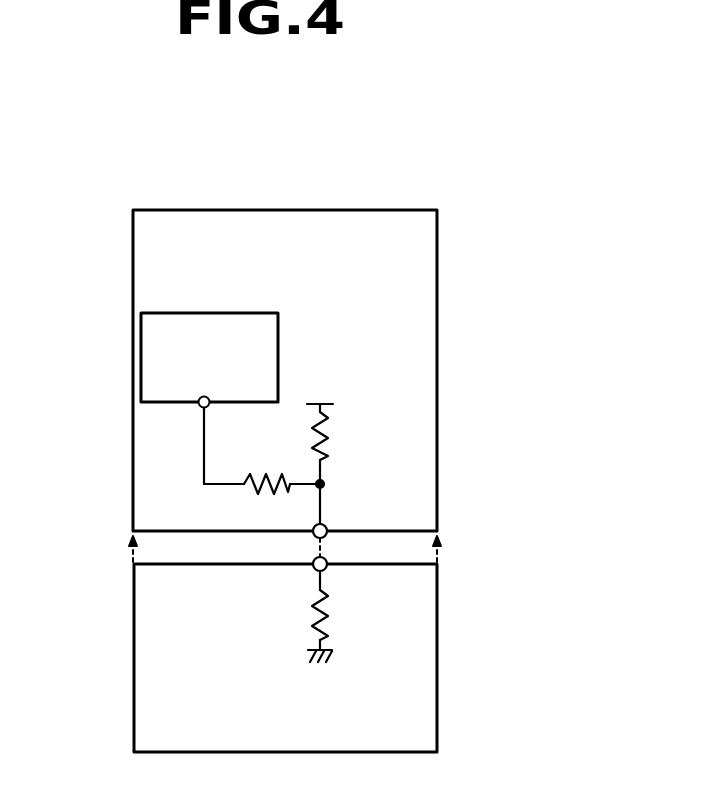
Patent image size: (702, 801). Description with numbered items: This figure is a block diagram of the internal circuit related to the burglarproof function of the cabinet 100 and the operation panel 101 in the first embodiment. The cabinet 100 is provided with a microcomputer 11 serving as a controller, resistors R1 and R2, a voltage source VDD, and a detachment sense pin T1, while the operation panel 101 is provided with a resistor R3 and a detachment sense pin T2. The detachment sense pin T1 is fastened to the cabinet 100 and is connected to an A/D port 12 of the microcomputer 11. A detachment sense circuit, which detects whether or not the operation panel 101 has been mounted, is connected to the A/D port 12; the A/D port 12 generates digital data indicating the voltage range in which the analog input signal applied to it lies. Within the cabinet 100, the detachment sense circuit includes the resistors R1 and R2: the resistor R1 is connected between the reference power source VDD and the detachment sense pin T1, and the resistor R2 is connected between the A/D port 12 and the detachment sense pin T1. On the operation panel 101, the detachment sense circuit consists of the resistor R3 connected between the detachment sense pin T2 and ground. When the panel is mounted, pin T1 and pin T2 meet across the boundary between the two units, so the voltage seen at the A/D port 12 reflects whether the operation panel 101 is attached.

The microcomputer 11 is at (262, 312).
The A/D port 12 is at (198, 408).
The cabinet 100 is at (438, 512).
The operation panel 101 is at (438, 585).
The resistor R1 is at (331, 443).
The resistor R2 is at (268, 471).
The resistor R3 is at (334, 618).
The detachment sense pin T1 is at (326, 526).
The detachment sense pin T2 is at (327, 569).
The reference power source VDD is at (358, 405).